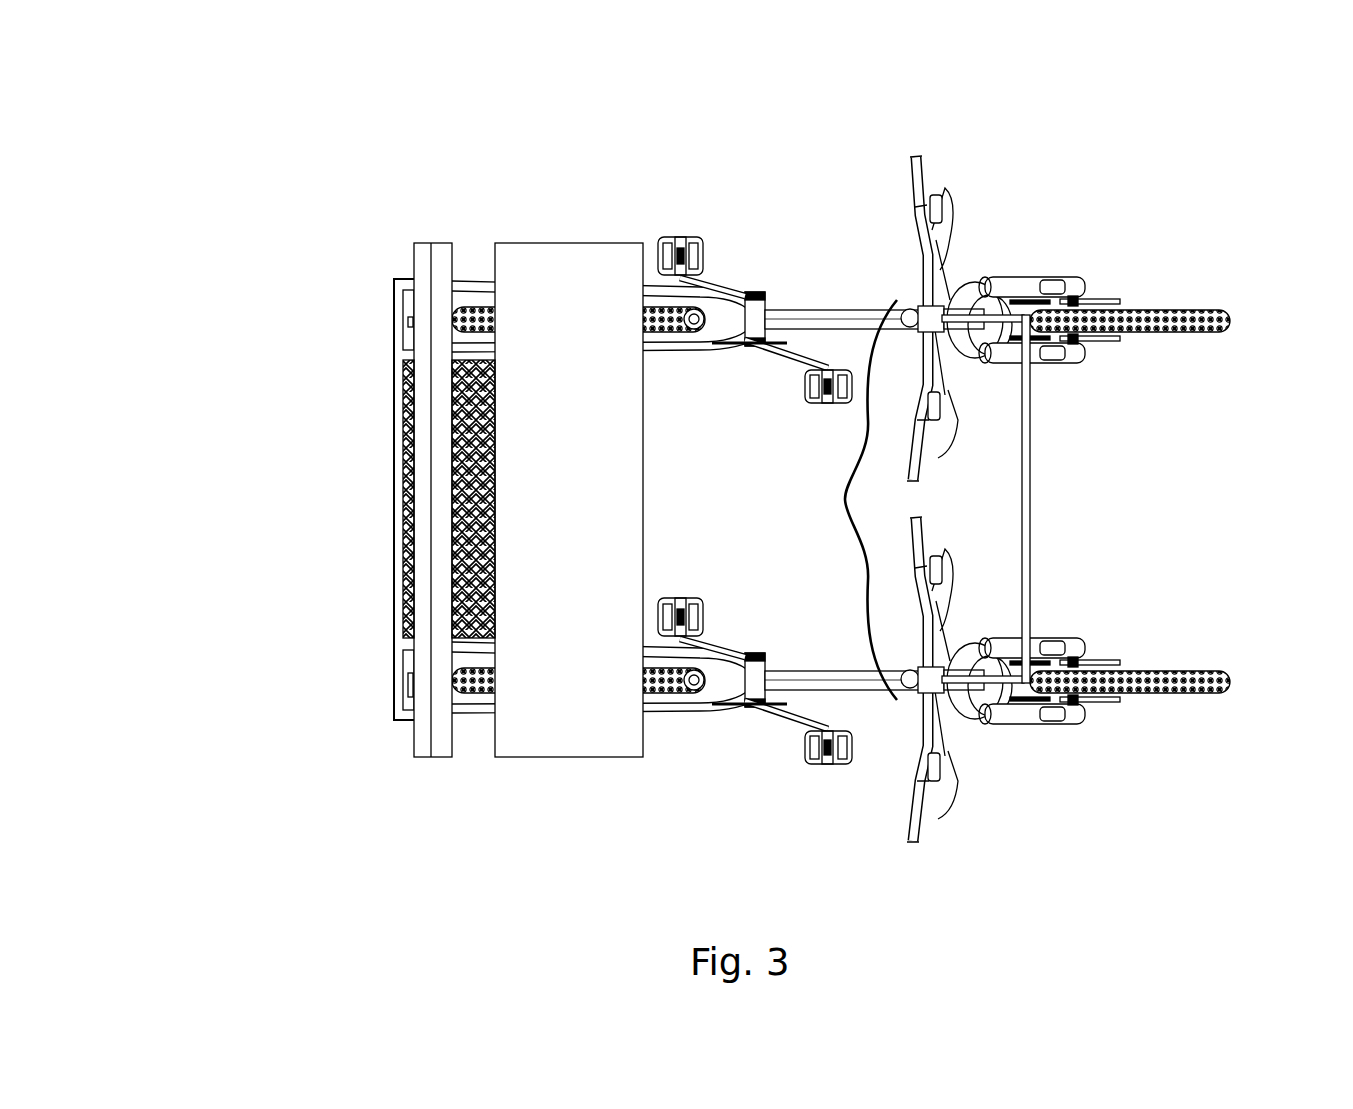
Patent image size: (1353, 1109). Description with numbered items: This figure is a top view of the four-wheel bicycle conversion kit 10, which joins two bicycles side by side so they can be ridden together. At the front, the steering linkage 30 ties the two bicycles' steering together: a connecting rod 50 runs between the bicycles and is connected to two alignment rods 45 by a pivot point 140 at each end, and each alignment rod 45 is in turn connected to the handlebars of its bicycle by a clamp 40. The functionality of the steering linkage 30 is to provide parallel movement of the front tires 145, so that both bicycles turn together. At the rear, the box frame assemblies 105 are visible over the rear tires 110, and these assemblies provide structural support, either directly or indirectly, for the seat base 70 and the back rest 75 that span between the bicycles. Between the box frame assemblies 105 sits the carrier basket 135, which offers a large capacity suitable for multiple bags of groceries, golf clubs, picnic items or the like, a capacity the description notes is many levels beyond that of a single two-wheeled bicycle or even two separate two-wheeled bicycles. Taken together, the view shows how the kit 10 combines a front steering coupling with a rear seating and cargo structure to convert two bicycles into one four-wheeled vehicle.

The kit 10 is at (175, 233).
The steering linkage 30 is at (840, 502).
The clamp 40 is at (955, 265).
The alignment rods 45 is at (1022, 275).
The connecting rod 50 is at (1027, 498).
The seat base 70 is at (567, 262).
The back rest 75 is at (430, 252).
The box frame assemblies 105 is at (393, 278).
The rear tires 110 is at (455, 319).
The carrier basket 135 is at (455, 461).
The pivot point 140 is at (1073, 290).
The front tires 145 is at (1180, 308).